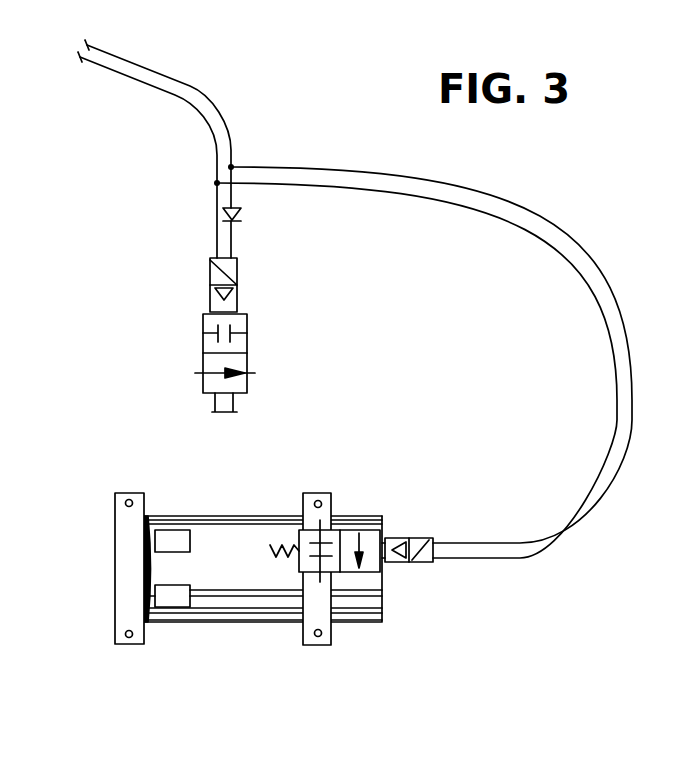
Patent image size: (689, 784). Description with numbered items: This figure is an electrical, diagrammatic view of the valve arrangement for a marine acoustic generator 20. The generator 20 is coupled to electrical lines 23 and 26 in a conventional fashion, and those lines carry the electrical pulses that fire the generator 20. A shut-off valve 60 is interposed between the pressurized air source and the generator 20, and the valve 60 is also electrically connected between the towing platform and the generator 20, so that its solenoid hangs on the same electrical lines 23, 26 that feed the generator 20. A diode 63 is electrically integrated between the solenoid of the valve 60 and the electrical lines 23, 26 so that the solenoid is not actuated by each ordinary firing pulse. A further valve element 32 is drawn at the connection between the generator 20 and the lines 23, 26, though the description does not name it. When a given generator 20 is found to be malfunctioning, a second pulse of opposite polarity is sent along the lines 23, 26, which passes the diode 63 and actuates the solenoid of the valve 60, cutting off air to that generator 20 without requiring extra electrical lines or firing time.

The marine acoustic generator 20 is at (232, 606).
The electrical line 23 is at (162, 74).
The electrical line 26 is at (143, 82).
The check valve 32 is at (415, 563).
The shut-off valve 60 is at (186, 351).
The diode 63 is at (243, 212).